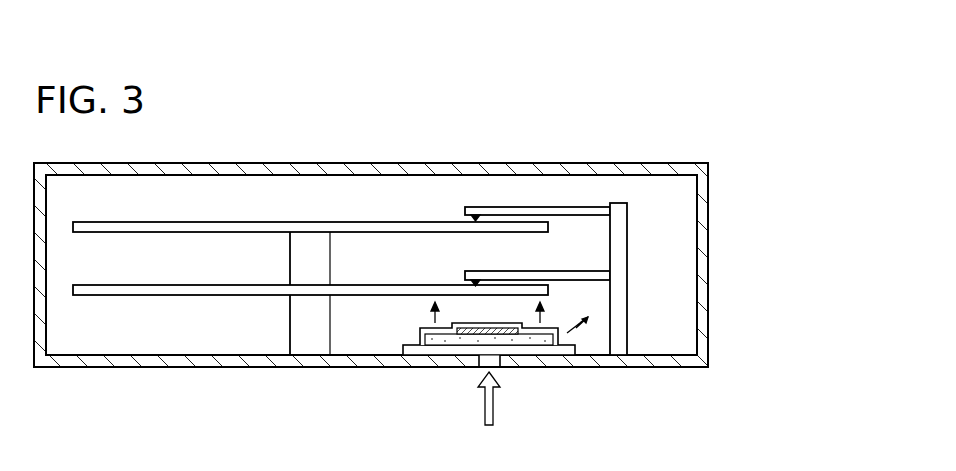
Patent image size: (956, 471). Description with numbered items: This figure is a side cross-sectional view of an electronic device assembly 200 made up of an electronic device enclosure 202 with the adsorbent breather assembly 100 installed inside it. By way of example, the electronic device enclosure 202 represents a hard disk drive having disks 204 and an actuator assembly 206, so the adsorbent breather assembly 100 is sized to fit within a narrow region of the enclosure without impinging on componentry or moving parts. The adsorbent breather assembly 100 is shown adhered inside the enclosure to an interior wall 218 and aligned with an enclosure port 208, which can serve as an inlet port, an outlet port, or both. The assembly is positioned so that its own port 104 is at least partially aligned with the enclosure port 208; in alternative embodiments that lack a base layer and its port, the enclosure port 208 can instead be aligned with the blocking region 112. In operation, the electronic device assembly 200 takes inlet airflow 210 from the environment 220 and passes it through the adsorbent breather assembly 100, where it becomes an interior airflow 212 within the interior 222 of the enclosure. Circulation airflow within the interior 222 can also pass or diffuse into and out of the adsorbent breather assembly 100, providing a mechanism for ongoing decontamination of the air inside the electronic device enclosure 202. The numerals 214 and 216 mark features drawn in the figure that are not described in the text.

The adsorbent breather assembly 100 is at (420, 340).
The port 104 is at (484, 357).
The blocking region 112 is at (510, 334).
The electronic device assembly 200 is at (503, 128).
The electronic device enclosure 202 is at (623, 163).
The disks 204 is at (197, 222).
The actuator assembly 206 is at (625, 255).
The enclosure port 208 is at (480, 368).
The inlet airflow 210 is at (497, 400).
The interior airflow 212 is at (542, 340).
The substrate board 214 is at (547, 367).
The sensing element 216 is at (502, 331).
The interior wall 218 is at (255, 335).
The environment 220 is at (229, 420).
The interior 222 is at (387, 265).